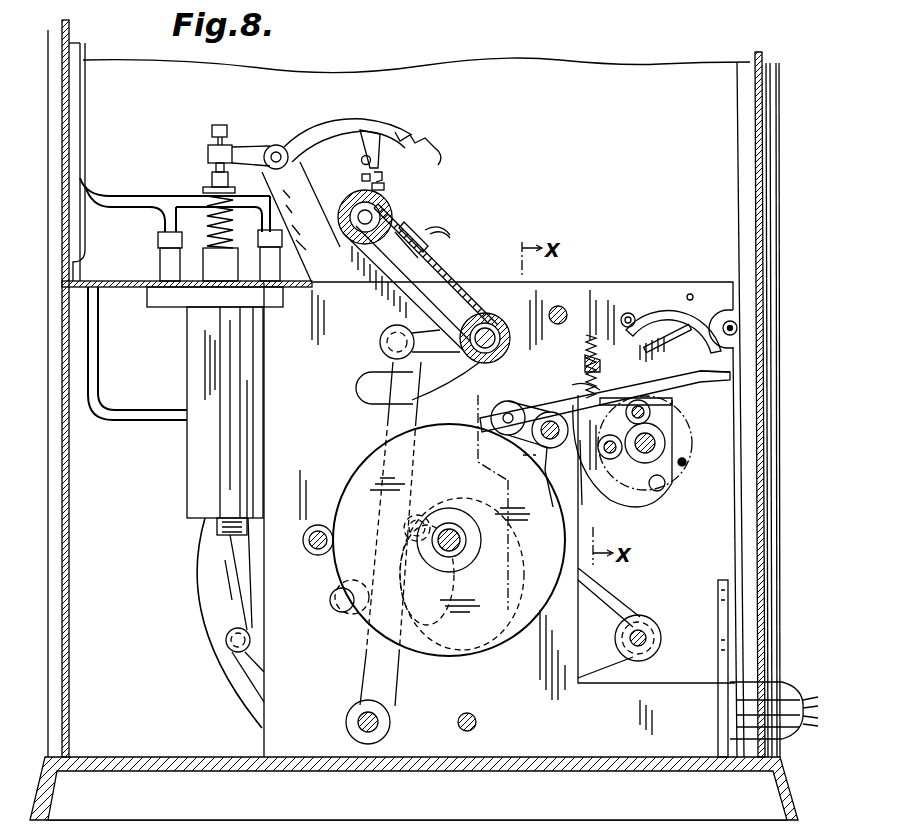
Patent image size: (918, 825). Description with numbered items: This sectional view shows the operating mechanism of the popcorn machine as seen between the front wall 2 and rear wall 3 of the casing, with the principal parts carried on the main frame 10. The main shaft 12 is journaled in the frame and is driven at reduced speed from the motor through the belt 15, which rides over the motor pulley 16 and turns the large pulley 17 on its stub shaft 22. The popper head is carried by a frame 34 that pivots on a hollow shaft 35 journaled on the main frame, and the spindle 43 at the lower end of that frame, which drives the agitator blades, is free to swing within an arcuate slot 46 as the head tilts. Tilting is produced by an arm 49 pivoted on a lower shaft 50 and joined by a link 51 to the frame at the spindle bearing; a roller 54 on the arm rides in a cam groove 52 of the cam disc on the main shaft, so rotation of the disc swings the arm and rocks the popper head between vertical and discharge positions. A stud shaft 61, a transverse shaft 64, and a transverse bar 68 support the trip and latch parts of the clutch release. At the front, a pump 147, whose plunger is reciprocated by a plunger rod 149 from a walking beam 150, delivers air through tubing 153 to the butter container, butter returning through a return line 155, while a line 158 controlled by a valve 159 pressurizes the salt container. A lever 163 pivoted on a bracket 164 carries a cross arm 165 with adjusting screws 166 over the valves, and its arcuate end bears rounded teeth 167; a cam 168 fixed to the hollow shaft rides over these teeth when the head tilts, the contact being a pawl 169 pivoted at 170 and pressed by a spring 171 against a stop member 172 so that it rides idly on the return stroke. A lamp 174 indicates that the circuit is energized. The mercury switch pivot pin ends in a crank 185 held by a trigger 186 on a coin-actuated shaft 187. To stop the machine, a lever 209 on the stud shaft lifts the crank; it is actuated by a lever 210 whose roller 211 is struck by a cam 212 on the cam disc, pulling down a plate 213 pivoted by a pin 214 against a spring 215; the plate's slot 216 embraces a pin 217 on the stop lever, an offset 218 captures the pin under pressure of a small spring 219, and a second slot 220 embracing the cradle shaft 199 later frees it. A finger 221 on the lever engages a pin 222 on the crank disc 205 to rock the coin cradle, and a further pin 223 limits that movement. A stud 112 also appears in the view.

The front wall 2 is at (70, 546).
The rear wall 3 is at (755, 212).
The main frame 10 is at (500, 519).
The main shaft 12 is at (442, 552).
The belt 15 is at (598, 585).
The motor pulley 16 is at (645, 620).
The large pulley 17 is at (196, 607).
The stub shaft 22 is at (336, 605).
The frame 34 is at (450, 272).
The hollow shaft 35 is at (393, 215).
The spindle 43 is at (503, 326).
The arcuate slot 46 is at (418, 383).
The arm 49 is at (392, 429).
The shaft 50 is at (380, 718).
The link 51 is at (433, 333).
The cam groove 52 is at (513, 574).
The roller 54 is at (404, 527).
The stud shaft 61 is at (551, 412).
The shaft 64 is at (562, 308).
The transverse bar 68 is at (475, 715).
The stud 112 is at (312, 555).
The pump 147 is at (193, 452).
The plunger rod 149 is at (230, 566).
The walking beam 150 is at (240, 653).
The tubing 153 is at (160, 226).
The return line 155 is at (100, 338).
The line 158 is at (206, 198).
The valve 159 is at (283, 264).
The lever 163 is at (320, 130).
The bracket 164 is at (301, 222).
The cross arm 165 is at (207, 153).
The adjusting screw 166 is at (240, 110).
The teeth 167 is at (420, 143).
The cam 168 is at (385, 188).
The pawl 169 is at (374, 147).
The pivot 170 is at (361, 160).
The spring 171 is at (384, 177).
The stop member 172 is at (361, 178).
The auxiliary lamp 174 is at (716, 667).
The crank 185 is at (672, 300).
The trigger 186 is at (655, 302).
The shaft 187 is at (626, 313).
The shaft 199 is at (660, 438).
The crank disc 205 is at (693, 443).
The lever 209 is at (712, 378).
The lever 210 is at (553, 460).
The roller 211 is at (512, 396).
The cam 212 is at (513, 454).
The plate 213 is at (688, 461).
The pin 214 is at (666, 486).
The spring 215 is at (588, 358).
The slot 216 is at (585, 383).
The pin 217 is at (622, 386).
The offset 218 is at (604, 347).
The spring 219 is at (683, 479).
The slot 220 is at (652, 412).
The finger 221 is at (672, 343).
The pin 222 is at (675, 401).
The pin 223 is at (600, 487).